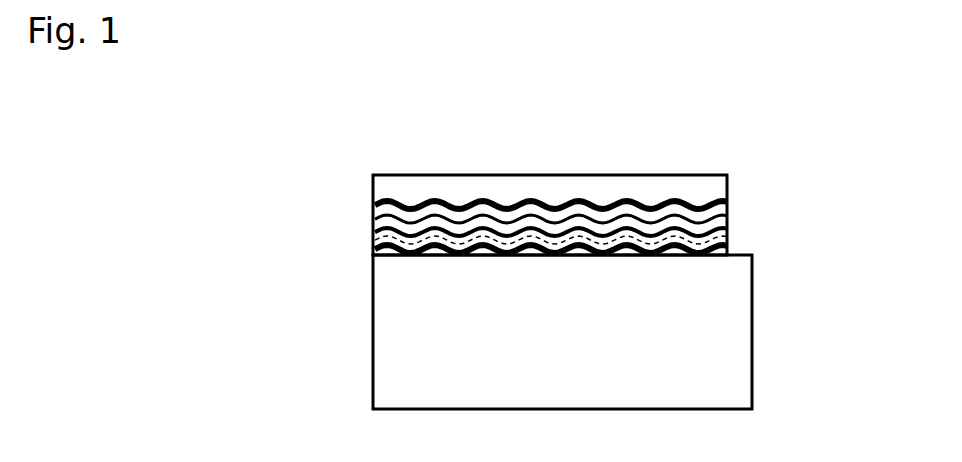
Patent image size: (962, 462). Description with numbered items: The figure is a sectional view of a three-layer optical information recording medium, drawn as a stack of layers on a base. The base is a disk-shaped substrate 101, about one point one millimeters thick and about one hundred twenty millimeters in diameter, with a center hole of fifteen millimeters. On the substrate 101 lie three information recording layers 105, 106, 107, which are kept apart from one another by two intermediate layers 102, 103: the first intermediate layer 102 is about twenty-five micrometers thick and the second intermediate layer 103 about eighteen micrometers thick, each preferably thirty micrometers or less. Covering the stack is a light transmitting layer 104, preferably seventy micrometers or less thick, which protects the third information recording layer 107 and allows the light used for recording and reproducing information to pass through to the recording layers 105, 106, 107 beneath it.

The substrate 101 is at (715, 360).
The first intermediate layer 102 is at (373, 237).
The second intermediate layer 103 is at (373, 214).
The light transmitting layer 104 is at (373, 175).
The first information recording layer 105 is at (715, 256).
The second information recording layer 106 is at (727, 237).
The third information recording layer 107 is at (727, 205).